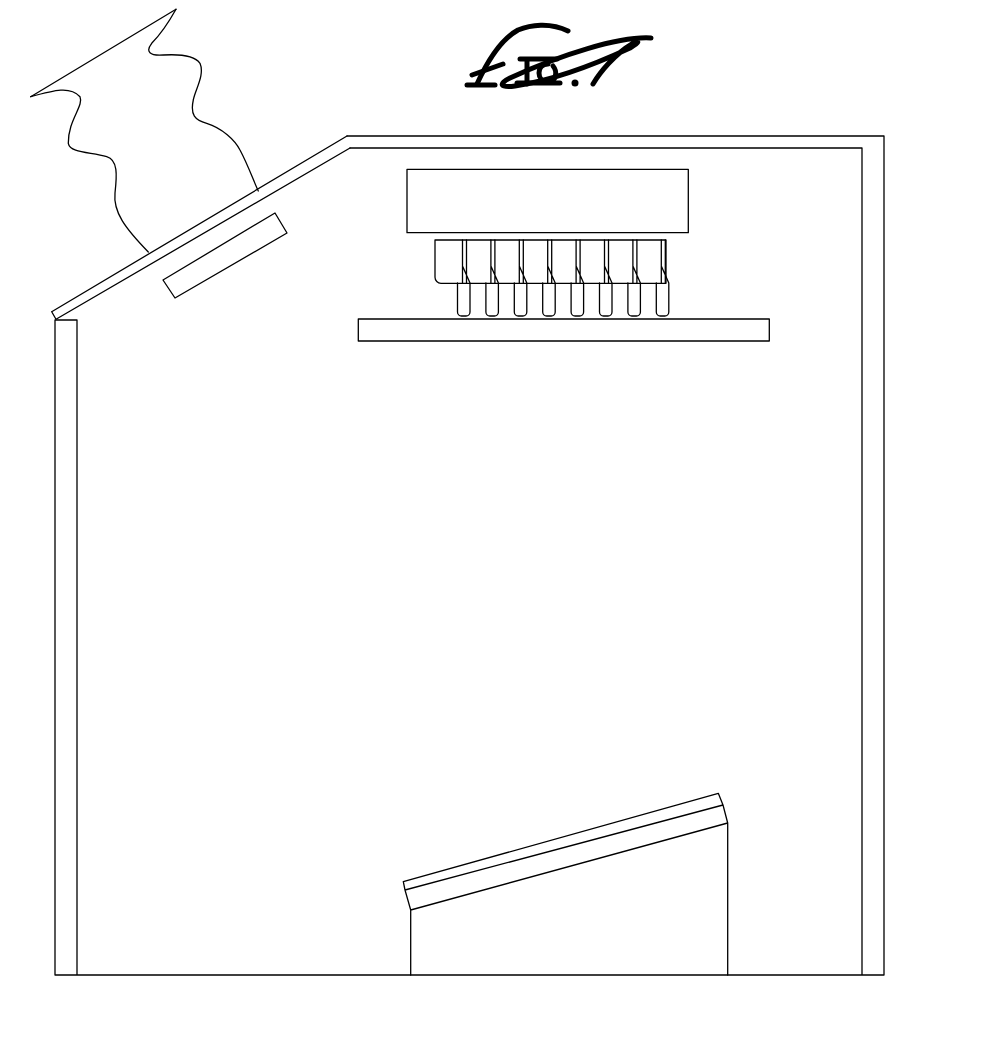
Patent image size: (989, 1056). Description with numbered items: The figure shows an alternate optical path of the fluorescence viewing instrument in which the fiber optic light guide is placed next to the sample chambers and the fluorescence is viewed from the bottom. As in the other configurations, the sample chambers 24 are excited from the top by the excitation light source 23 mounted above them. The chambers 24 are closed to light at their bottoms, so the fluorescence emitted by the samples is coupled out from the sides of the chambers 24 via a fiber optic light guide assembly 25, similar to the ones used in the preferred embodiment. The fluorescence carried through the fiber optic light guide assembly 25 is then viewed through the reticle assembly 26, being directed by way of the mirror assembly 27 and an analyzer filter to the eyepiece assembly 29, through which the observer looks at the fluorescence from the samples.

The excitation light source 23 is at (688, 202).
The sample chambers 24 is at (666, 253).
The fiber optic light guide assembly 25 is at (672, 287).
The reticle assembly 26 is at (661, 342).
The mirror assembly 27 is at (580, 832).
The eyepiece assembly 29 is at (88, 153).